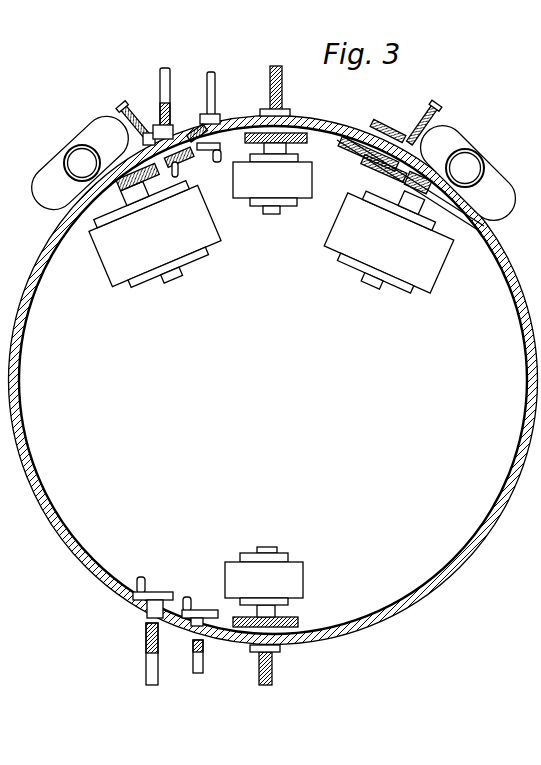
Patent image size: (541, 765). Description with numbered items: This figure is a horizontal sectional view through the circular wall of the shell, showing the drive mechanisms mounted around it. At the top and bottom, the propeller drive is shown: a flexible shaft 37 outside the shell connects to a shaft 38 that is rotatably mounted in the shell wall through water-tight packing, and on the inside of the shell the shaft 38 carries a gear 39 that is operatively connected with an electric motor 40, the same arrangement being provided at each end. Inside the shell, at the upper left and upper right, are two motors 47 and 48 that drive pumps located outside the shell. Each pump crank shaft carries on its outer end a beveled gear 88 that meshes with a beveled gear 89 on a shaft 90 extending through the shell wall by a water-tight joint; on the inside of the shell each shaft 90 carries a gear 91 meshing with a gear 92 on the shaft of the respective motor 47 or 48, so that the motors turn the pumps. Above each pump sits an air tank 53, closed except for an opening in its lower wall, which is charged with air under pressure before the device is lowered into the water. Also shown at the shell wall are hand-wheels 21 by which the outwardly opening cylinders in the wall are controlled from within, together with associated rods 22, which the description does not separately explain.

The hand-wheel 21 is at (217, 147).
The rod 22 is at (207, 84).
The flexible shaft 37 is at (270, 77).
The shaft 38 is at (277, 132).
The gear 39 is at (300, 136).
The electric motor 40 is at (268, 379).
The motor 47 is at (153, 232).
The motor 48 is at (390, 239).
The air tank 53 is at (274, 168).
The beveled gear 88 is at (126, 112).
The beveled gear 89 is at (167, 128).
The shaft 90 is at (362, 162).
The gear 91 is at (184, 165).
The gear 92 is at (124, 187).